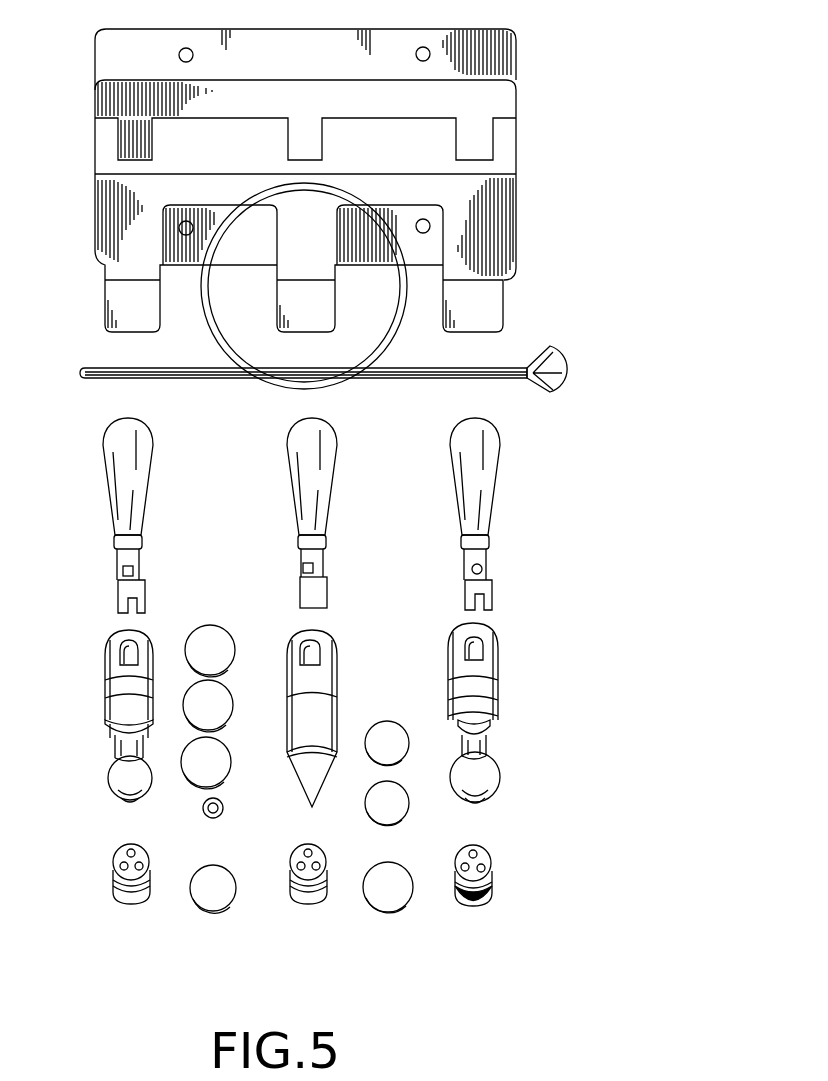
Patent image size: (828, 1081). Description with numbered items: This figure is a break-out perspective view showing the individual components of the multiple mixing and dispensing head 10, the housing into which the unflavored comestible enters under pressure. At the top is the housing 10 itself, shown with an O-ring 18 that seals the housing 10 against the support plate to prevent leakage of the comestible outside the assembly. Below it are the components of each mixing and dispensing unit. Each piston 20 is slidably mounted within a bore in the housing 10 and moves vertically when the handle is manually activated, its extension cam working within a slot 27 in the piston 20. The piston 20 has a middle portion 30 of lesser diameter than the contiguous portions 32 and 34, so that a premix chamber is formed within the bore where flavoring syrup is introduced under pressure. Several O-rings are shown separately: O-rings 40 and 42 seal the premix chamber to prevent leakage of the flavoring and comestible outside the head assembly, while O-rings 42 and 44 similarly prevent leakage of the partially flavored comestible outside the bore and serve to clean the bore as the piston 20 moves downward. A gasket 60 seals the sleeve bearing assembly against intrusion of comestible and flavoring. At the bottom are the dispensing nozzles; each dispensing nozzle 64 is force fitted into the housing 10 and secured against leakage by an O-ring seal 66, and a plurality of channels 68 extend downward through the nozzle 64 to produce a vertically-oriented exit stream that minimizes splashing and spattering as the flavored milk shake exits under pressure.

The multiple mixing and dispensing head 10 is at (540, 206).
The O-ring 18 is at (212, 347).
The piston 20 is at (104, 698).
The slot 27 is at (301, 652).
The middle portion 30 is at (126, 748).
The contiguous portion 32 is at (106, 726).
The contiguous portion 34 is at (111, 771).
The O-ring 40 is at (234, 760).
The O-ring 42 is at (239, 716).
The O-ring 44 is at (235, 661).
The gasket 60 is at (227, 811).
The dispensing nozzle 64 is at (148, 893).
The O-ring seal 66 is at (237, 906).
The channels 68 is at (290, 854).